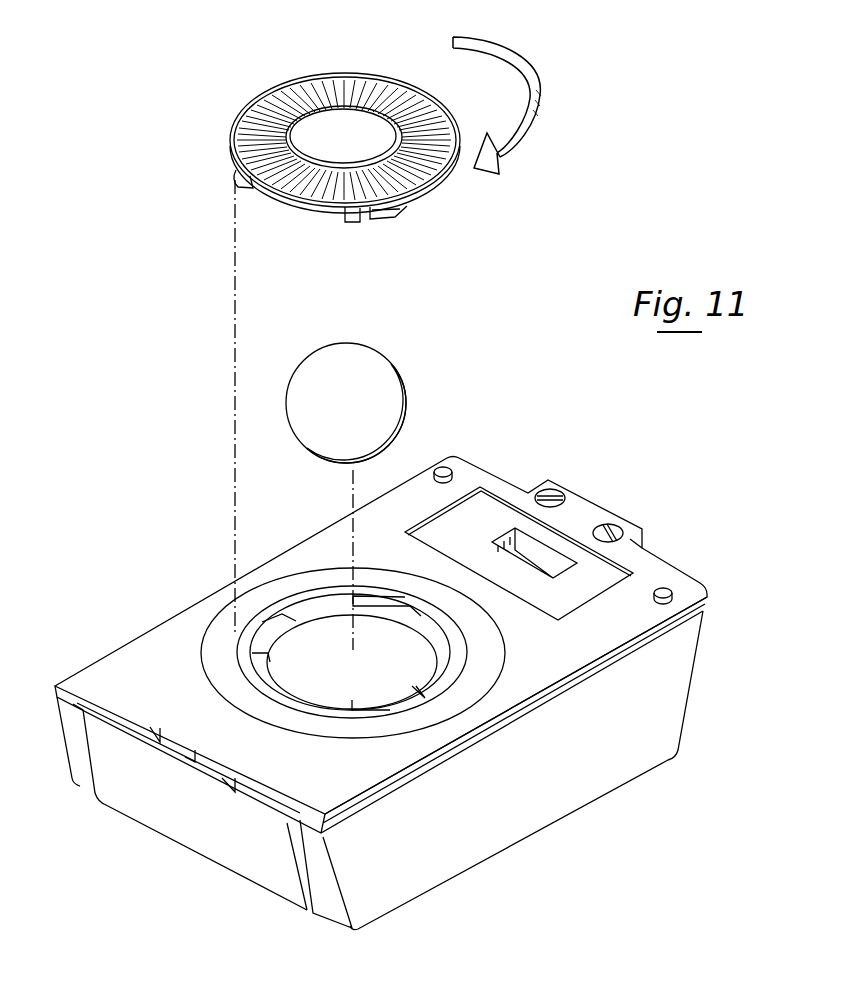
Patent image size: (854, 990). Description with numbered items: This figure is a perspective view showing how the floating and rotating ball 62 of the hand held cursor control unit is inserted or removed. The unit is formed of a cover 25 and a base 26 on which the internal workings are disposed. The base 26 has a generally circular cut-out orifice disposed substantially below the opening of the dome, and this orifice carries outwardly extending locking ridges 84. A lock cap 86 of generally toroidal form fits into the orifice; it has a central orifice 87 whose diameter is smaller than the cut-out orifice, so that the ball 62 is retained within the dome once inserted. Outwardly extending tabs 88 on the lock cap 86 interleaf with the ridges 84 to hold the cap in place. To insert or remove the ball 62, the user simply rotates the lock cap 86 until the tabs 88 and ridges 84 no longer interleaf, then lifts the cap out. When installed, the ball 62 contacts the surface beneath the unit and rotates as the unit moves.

The cover 25 is at (607, 773).
The base 26 is at (650, 582).
The ball 62 is at (393, 390).
The locking ridges 84 is at (313, 607).
The lock cap 86 is at (428, 117).
The central orifice 87 is at (336, 115).
The tabs 88 is at (345, 214).